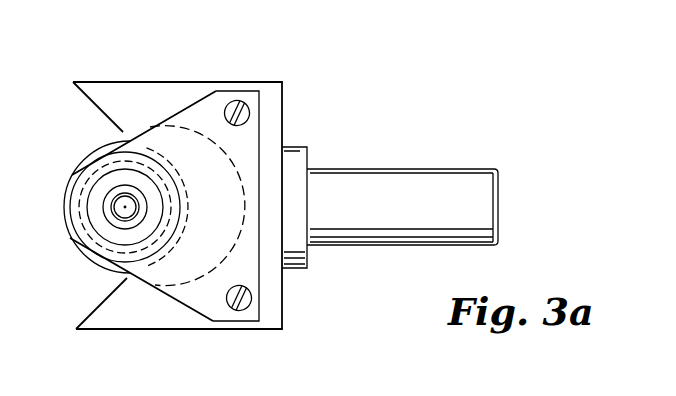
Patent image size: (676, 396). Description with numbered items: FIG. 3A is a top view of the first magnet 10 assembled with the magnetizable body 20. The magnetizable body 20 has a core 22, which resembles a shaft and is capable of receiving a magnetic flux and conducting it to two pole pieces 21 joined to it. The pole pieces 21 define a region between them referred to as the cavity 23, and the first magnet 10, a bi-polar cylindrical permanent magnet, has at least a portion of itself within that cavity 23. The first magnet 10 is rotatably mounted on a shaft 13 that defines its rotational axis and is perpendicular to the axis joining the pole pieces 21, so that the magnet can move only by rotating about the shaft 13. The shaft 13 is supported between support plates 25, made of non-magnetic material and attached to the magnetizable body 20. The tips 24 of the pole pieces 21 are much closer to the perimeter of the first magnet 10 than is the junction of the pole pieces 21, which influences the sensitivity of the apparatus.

The first magnet 10 is at (72, 240).
The shaft 13 is at (121, 205).
The magnetizable body 20 is at (284, 309).
The pole pieces 21 is at (113, 90).
The core 22 is at (422, 178).
The cavity 23 is at (207, 192).
The tips 24 is at (122, 133).
The support plates 25 is at (198, 97).